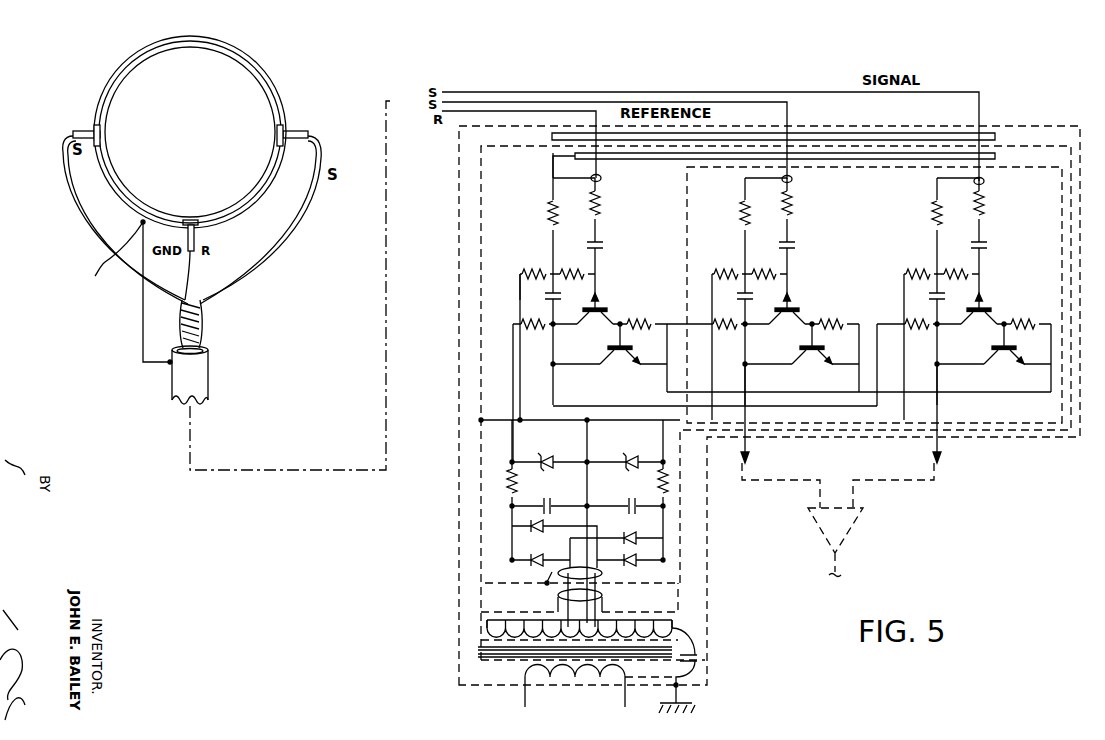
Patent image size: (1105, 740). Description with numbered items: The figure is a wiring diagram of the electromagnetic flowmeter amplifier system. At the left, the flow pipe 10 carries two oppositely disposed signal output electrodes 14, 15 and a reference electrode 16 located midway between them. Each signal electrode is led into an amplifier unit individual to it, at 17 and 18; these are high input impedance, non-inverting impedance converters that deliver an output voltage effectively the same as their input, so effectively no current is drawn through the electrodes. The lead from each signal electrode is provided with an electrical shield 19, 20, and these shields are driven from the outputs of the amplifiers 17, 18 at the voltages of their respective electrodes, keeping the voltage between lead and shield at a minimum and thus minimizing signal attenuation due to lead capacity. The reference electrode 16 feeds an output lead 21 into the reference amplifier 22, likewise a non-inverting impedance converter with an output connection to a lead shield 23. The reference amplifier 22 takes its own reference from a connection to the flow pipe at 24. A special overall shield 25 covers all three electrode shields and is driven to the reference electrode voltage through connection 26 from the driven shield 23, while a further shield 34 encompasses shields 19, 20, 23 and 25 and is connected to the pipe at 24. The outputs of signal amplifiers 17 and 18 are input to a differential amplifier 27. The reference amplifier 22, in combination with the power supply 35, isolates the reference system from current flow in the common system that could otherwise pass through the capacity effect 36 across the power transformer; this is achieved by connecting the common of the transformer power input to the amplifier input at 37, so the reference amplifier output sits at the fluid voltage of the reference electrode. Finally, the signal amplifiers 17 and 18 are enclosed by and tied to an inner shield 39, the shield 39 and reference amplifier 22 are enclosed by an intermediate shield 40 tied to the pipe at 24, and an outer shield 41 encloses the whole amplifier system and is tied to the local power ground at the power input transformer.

The flow pipe 10 is at (247, 52).
The signal output electrode 14 is at (79, 130).
The signal output electrode 15 is at (300, 138).
The reference electrode 16 is at (198, 238).
The amplifier unit 17 is at (817, 252).
The amplifier unit 18 is at (1000, 250).
The electrical shield 19 is at (323, 172).
The electrical shield 20 is at (64, 159).
The output lead 21 is at (191, 263).
The reference amplifier 22 is at (620, 257).
The lead shield 23 is at (200, 298).
The connection to the flow pipe 24 is at (118, 292).
The overall shield 25 is at (210, 357).
The connection 26 is at (555, 168).
The differential amplifier 27 is at (838, 520).
The further shield 34 is at (168, 395).
The power supply 35 is at (568, 699).
The capacity effect 36 is at (700, 658).
The input connection of reference amplifier 37 is at (516, 280).
The inner shield 39 is at (990, 424).
The intermediate shield 40 is at (461, 494).
The outer shield 41 is at (458, 545).